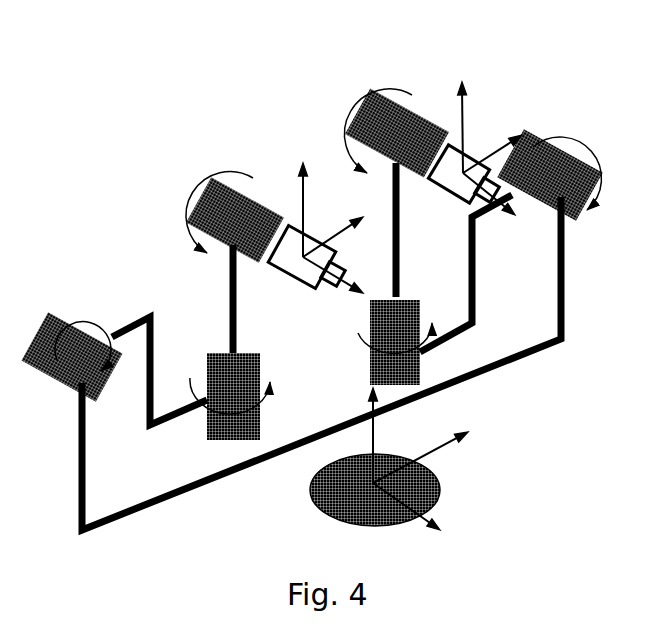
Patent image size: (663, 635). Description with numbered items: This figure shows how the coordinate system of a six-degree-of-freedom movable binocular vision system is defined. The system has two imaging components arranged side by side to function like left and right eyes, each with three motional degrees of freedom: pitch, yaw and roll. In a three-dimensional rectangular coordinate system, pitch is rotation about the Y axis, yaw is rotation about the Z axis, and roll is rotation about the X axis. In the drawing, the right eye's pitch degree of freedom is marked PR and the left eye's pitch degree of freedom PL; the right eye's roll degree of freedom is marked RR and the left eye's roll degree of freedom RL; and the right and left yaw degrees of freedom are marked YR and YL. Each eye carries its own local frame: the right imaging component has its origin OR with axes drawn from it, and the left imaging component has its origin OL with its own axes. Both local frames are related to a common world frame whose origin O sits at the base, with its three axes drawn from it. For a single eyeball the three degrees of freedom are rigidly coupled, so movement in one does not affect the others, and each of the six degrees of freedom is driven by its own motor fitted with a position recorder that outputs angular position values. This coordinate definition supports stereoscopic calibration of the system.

The right camera pitch axis PR is at (71, 340).
The left camera pitch axis PL is at (559, 173).
The right camera roll axis RR is at (235, 196).
The left camera roll axis RL is at (396, 114).
The right camera yaw axis YR is at (256, 396).
The left camera yaw axis YL is at (422, 342).
The right camera coordinate origin OR is at (315, 228).
The left camera coordinate origin OL is at (479, 145).
The world coordinate origin O is at (403, 464).